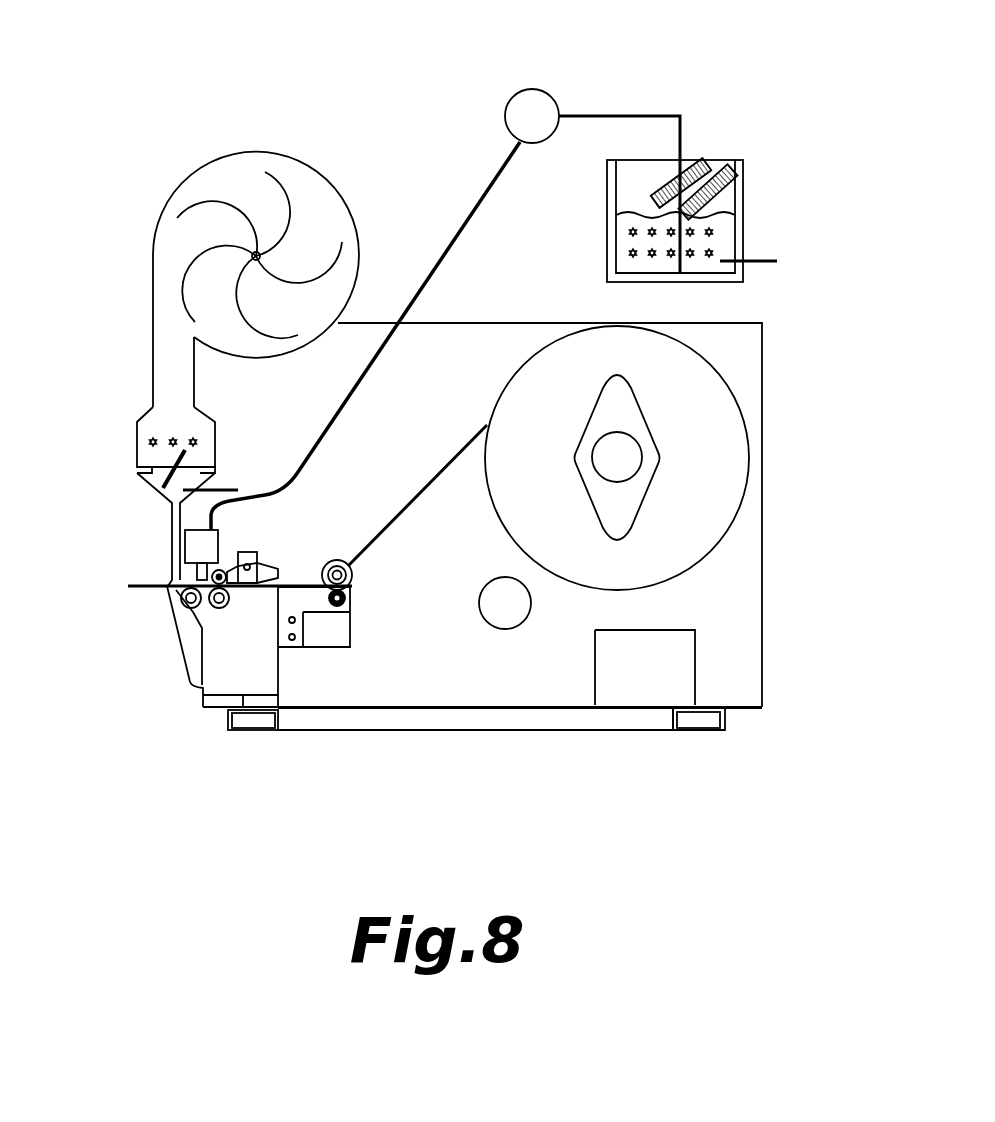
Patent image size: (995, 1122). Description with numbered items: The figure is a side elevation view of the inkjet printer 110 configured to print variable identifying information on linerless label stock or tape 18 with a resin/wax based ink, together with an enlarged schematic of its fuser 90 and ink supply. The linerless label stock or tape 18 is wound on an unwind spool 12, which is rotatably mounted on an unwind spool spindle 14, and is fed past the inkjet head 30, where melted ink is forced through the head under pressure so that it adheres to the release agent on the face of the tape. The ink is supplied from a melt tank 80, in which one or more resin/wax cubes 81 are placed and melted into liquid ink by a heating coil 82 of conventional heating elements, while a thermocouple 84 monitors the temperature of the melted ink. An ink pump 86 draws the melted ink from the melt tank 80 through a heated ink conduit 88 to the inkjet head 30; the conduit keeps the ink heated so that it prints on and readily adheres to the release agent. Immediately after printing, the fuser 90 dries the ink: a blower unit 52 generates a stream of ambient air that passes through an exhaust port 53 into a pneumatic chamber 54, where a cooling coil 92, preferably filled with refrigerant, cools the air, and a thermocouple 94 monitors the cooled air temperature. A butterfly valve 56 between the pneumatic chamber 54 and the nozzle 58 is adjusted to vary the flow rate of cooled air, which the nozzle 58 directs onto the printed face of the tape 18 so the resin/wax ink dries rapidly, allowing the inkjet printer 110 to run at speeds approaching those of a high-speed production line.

The unwind spool 12 is at (684, 463).
The unwind spool spindle 14 is at (604, 460).
The linerless label stock or tape 18 is at (145, 588).
The inkjet head 30 is at (220, 533).
The blower unit 52 is at (198, 183).
The exhaust port 53 is at (162, 353).
The pneumatic chamber 54 is at (140, 430).
The butterfly valve 56 is at (157, 488).
The nozzle 58 is at (167, 527).
The melt tank 80 is at (628, 182).
The resin/wax cubes 81 is at (703, 167).
The heating coil 82 is at (712, 232).
The thermocouple 84 is at (770, 265).
The ink pump 86 is at (592, 181).
The heated ink conduit 88 is at (493, 175).
The fuser 90 is at (204, 105).
The cooling coil 92 is at (148, 442).
The thermocouple 94 is at (230, 485).
The inkjet printer 110 is at (786, 533).